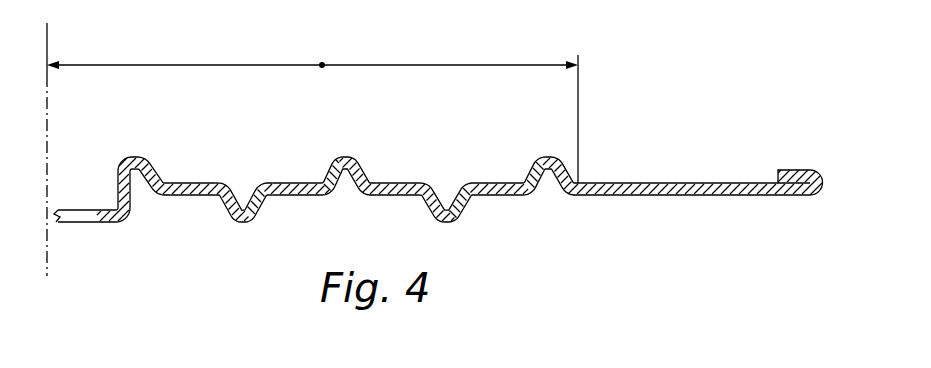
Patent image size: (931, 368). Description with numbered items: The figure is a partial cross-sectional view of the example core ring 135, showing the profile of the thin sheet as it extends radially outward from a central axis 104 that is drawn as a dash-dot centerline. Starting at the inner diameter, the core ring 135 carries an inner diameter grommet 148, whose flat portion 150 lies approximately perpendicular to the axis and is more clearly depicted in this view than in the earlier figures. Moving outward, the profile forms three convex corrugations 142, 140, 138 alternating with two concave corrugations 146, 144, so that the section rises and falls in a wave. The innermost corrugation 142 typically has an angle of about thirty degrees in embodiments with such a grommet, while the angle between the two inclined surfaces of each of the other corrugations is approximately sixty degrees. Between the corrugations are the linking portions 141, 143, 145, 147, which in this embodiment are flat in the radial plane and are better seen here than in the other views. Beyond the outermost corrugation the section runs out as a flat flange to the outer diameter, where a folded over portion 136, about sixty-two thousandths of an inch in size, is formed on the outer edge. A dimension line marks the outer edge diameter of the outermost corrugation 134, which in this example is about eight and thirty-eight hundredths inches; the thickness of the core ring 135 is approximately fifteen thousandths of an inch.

The centerline axis 104 is at (49, 37).
The outer edge diameter of the outermost corrugation 134 is at (322, 64).
The core ring 135 is at (612, 150).
The folded over portion 136 is at (790, 170).
The convex corrugation 138 is at (548, 157).
The convex corrugation 140 is at (347, 157).
The linking portion 141 is at (198, 183).
The innermost corrugation 142 is at (136, 157).
The linking portion 143 is at (290, 183).
The concave corrugation 144 is at (447, 222).
The linking portion 145 is at (397, 183).
The concave corrugation 146 is at (243, 222).
The linking portion 147 is at (496, 183).
The inner diameter grommet 148 is at (117, 206).
The flat portion 150 is at (104, 210).